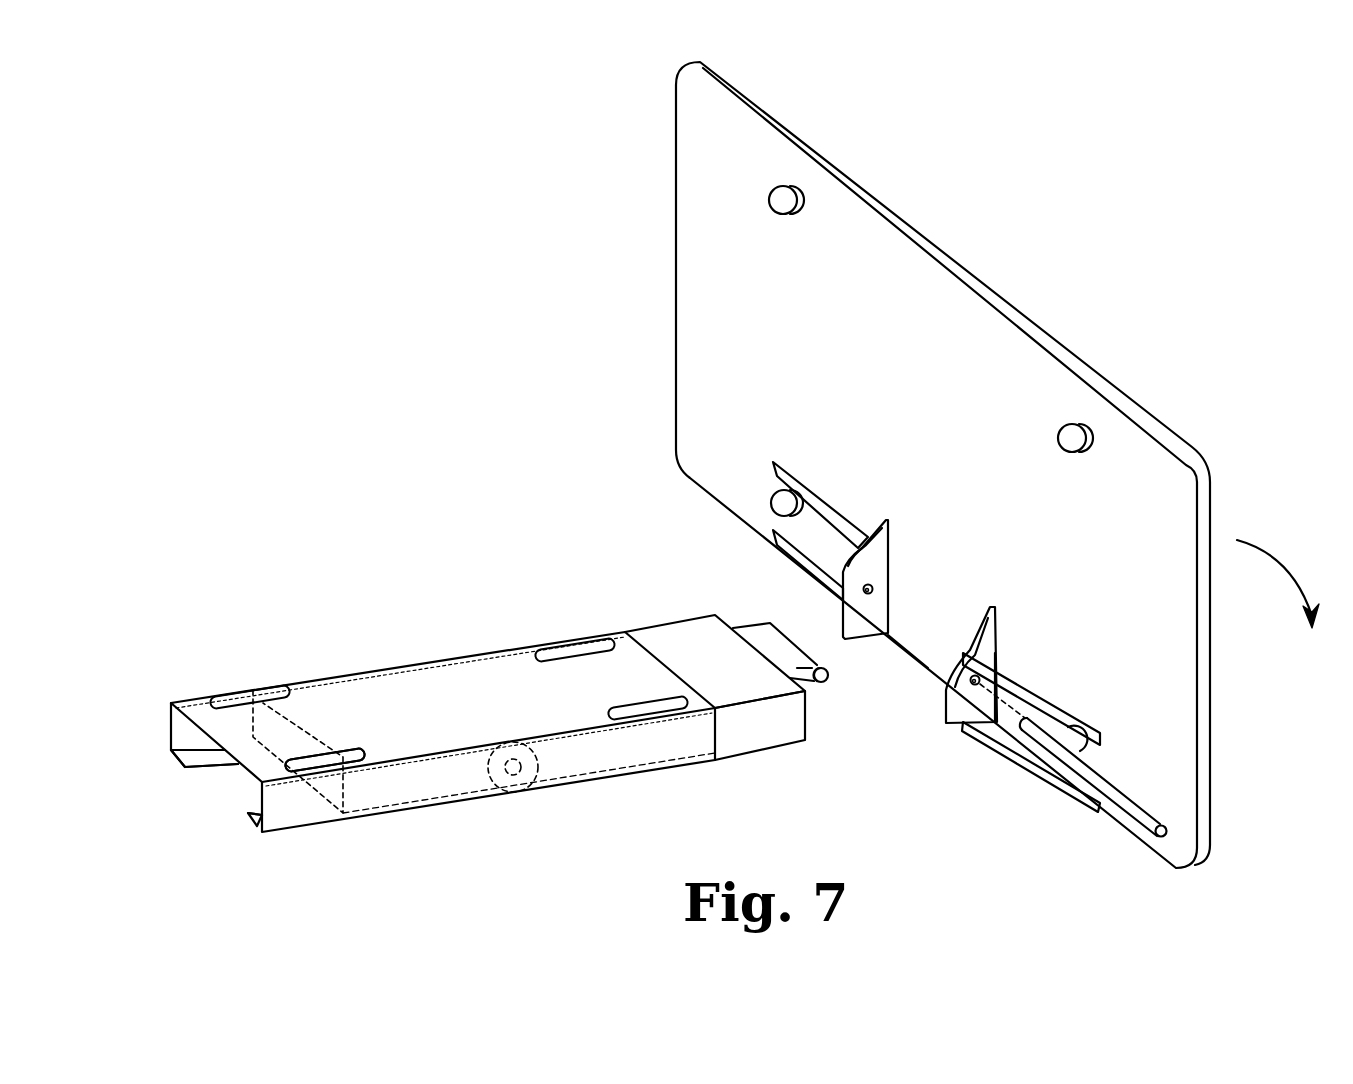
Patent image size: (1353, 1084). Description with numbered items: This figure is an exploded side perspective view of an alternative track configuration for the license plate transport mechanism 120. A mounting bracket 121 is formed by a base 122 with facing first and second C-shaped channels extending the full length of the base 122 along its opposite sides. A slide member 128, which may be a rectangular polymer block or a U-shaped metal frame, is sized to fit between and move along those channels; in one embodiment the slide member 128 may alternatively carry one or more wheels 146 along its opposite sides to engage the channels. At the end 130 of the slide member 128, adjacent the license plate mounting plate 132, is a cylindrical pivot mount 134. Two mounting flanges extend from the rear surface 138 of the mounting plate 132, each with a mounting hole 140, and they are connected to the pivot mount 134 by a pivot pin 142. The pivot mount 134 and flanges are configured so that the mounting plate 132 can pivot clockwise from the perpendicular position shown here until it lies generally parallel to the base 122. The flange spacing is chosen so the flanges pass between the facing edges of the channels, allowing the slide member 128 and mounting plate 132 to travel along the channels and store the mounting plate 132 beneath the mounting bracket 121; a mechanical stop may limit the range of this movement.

The license plate transport mechanism 120 is at (486, 580).
The mounting bracket 121 is at (200, 708).
The base 122 is at (516, 709).
The slide member 128 is at (740, 690).
The end 130 is at (735, 628).
The license plate mounting plate 132 is at (1053, 345).
The cylindrical pivot mount 134 is at (830, 666).
The rear surface 138 is at (958, 446).
The mounting hole 140 is at (977, 675).
The pivot pin 142 is at (1115, 797).
The wheels 146 is at (497, 790).